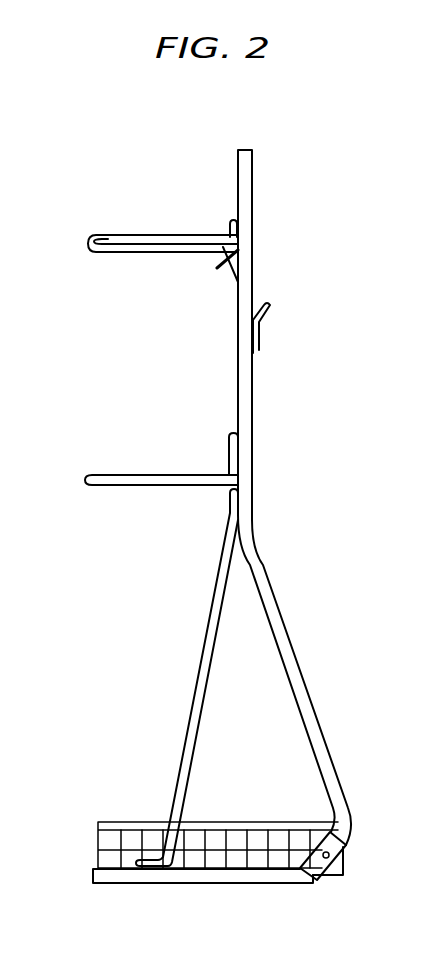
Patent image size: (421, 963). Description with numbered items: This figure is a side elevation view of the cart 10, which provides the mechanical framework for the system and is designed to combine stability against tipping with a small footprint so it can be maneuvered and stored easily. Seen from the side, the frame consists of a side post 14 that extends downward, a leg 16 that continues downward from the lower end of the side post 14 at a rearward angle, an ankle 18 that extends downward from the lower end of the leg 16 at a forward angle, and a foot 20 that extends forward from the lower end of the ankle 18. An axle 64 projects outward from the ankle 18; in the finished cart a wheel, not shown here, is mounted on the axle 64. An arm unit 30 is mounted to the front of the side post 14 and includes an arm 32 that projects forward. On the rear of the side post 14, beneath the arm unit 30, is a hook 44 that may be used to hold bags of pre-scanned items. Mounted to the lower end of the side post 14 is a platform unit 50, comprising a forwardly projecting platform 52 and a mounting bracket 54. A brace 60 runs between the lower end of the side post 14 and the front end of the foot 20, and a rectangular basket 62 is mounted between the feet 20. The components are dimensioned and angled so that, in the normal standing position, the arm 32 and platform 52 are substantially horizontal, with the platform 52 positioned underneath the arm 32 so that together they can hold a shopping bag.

The cart 10 is at (292, 122).
The side posts 14 is at (253, 405).
The legs 16 is at (286, 615).
The ankles 18 is at (323, 874).
The feet 20 is at (185, 884).
The arm unit 30 is at (151, 192).
The arms 32 is at (117, 254).
The hooks 44 is at (258, 340).
The platform unit 50 is at (122, 428).
The platform 52 is at (103, 488).
The mounting bracket 54 is at (227, 456).
The braces 60 is at (201, 648).
The basket 62 is at (225, 823).
The axles 64 is at (329, 856).